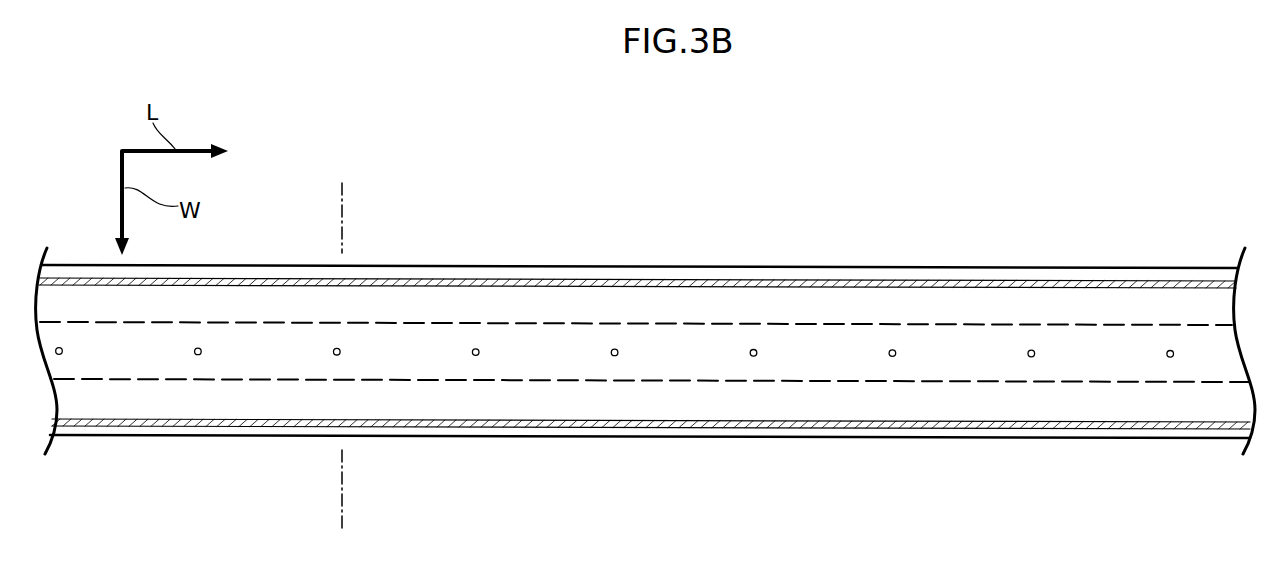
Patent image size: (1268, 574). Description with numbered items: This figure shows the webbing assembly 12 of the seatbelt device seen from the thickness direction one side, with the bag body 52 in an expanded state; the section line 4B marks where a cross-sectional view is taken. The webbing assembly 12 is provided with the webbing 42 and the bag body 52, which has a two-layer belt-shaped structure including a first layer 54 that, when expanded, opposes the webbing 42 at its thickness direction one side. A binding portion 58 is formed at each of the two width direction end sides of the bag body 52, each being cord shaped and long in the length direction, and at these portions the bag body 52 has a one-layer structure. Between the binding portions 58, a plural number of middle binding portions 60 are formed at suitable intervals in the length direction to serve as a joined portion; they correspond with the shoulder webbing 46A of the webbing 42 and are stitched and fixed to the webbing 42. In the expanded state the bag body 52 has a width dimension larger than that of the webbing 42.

The webbing assembly 12 is at (851, 236).
The bag body 52 is at (590, 258).
The first layer 54 is at (687, 298).
The binding portion 58 is at (508, 285).
The middle binding portion 60 is at (63, 350).
The shoulder webbing 46A is at (645, 406).
The webbing 42 is at (650, 383).
The section line 4B is at (355, 198).